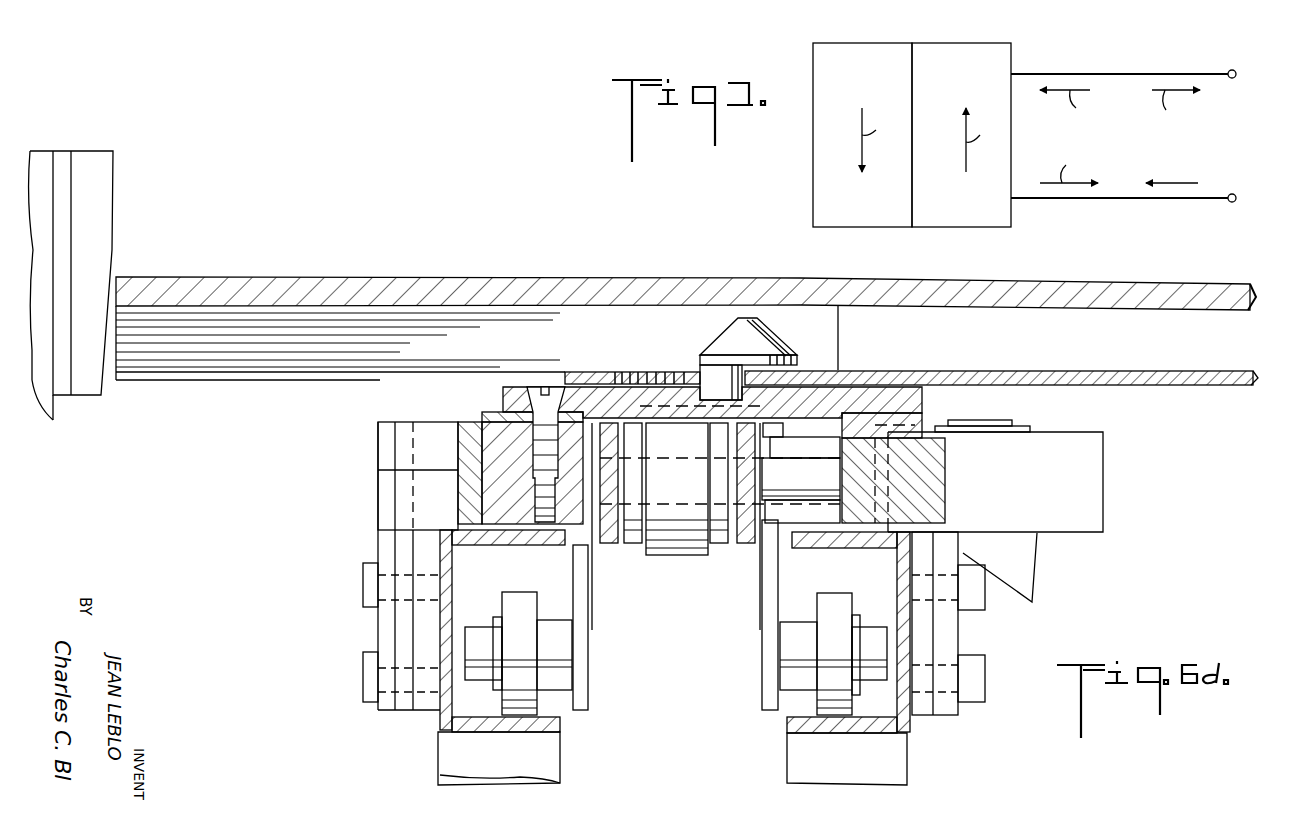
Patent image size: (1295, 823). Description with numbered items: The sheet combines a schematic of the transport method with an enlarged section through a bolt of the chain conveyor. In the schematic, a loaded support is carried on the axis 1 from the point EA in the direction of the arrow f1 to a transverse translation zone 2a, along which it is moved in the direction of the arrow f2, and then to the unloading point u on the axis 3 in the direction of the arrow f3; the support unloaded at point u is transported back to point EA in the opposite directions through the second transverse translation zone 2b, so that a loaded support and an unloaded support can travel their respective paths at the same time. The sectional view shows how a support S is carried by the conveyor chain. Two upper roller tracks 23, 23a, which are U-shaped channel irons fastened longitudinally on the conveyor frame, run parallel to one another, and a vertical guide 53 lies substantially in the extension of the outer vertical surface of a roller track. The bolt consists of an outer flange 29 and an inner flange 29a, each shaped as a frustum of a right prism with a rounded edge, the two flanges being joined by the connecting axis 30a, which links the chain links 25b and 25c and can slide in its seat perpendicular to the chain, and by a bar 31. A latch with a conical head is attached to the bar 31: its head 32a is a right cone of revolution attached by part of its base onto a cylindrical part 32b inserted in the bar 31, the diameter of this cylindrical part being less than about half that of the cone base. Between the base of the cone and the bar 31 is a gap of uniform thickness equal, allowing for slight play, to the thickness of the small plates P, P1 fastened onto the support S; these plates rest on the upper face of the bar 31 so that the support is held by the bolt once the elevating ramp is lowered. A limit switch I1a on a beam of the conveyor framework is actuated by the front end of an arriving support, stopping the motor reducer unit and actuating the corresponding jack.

In FIG. 1, the axis 1 is at (1155, 200).
In FIG. 1, the transverse translation zone 2a is at (952, 228).
In FIG. 1, the transverse translation zone 2b is at (870, 228).
In FIG. 1, the axis 3 is at (1118, 74).
In FIG. 1, the point U u is at (1252, 73).
In FIG. 1, the point EA is at (1259, 198).
In FIG. 1, the arrow f1 is at (1119, 136).
In FIG. 1, the arrow f2 is at (931, 140).
In FIG. 1, the arrow f3 is at (1120, 136).
In FIG. 6d, the limit switch I1a is at (113, 218).
In FIG. 6d, the support S is at (458, 276).
In FIG. 6d, the small plate P is at (590, 370).
In FIG. 6d, the small plate P1 is at (862, 370).
In FIG. 6d, the roller track 23 is at (455, 568).
In FIG. 6d, the roller track 23a is at (900, 570).
In FIG. 6d, the chain link 25b is at (616, 548).
In FIG. 6d, the chain link 25c is at (720, 548).
In FIG. 6d, the outer flange 29 is at (492, 420).
In FIG. 6d, the inner flange 29a is at (945, 467).
In FIG. 6d, the axis 30a is at (808, 525).
In FIG. 6d, the bar 31 is at (915, 385).
In FIG. 6d, the head 32a is at (762, 348).
In FIG. 6d, the cylindrical part 32b is at (702, 372).
In FIG. 6d, the vertical guide 53 is at (378, 470).